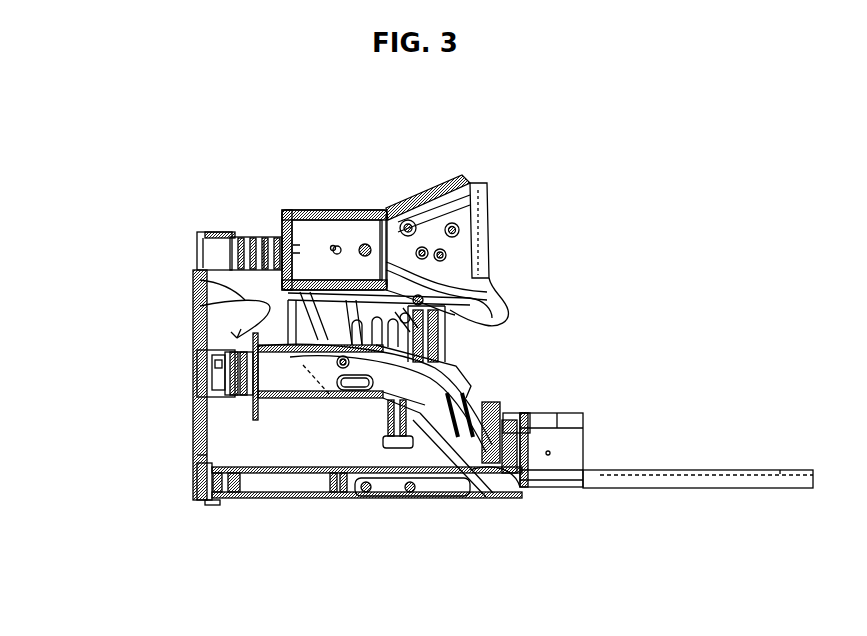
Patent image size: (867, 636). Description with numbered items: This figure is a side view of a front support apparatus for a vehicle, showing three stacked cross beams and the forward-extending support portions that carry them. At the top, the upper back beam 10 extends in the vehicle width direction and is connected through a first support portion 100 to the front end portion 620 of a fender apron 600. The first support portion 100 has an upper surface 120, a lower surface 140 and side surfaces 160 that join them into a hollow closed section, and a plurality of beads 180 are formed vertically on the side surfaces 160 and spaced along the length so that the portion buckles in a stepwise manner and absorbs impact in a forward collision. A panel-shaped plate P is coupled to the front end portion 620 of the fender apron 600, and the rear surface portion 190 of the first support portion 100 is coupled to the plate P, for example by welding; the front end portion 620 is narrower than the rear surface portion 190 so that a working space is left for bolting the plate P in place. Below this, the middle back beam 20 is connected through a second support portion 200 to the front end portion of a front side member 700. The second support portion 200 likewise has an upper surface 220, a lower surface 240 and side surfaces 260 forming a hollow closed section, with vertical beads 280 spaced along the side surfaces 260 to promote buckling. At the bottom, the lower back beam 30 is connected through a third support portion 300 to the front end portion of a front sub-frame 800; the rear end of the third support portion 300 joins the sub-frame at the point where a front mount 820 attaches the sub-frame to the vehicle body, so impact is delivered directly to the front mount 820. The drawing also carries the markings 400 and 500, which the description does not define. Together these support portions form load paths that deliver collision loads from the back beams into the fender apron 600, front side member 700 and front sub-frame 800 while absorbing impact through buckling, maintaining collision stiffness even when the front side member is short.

The upper back beam 10 is at (200, 250).
The middle back beam 20 is at (200, 360).
The lower back beam 30 is at (197, 485).
The first support portion 100 is at (247, 224).
The upper surface 120 is at (249, 210).
The lower surface 140 is at (200, 280).
The side surface 160 is at (259, 240).
The bead 180 is at (332, 198).
The rear surface portion 190 is at (337, 250).
The second support portion 200 is at (420, 299).
The upper surface 220 is at (466, 312).
The lower surface 240 is at (250, 418).
The side surface 260 is at (243, 370).
The bead 280 is at (159, 373).
The third support portion 300 is at (282, 480).
The insertion direction 400 is at (200, 306).
The support frame 500 is at (235, 407).
The fender apron 600 is at (470, 197).
The front end portion 620 is at (293, 253).
The front side member 700 is at (437, 372).
The front sub-frame 800 is at (443, 492).
The front mount 820 is at (385, 490).
The plate P is at (270, 237).